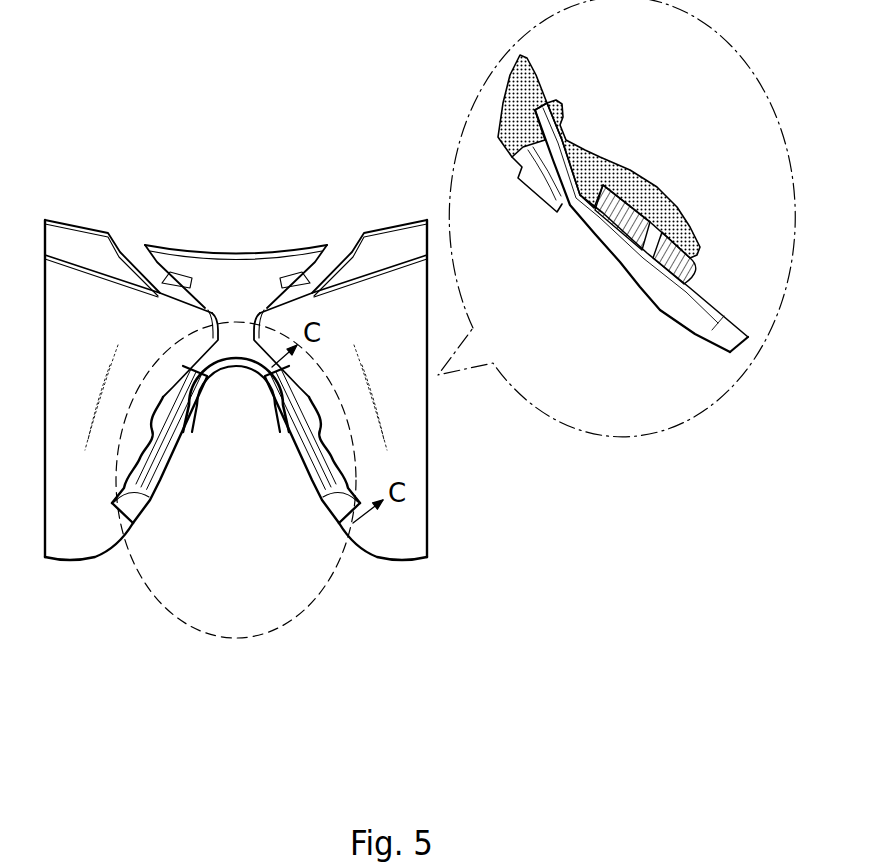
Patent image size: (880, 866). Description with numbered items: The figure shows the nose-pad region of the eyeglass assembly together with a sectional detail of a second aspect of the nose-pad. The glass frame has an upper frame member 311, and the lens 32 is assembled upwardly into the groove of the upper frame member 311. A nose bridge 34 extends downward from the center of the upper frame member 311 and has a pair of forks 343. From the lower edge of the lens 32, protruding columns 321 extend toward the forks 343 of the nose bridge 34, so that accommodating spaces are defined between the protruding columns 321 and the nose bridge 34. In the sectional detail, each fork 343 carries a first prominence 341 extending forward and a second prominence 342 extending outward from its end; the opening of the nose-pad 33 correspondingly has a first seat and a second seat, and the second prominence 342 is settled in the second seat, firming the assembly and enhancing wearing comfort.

The upper frame member 311 is at (383, 250).
The lens 32 is at (77, 550).
The protruding column 321 is at (601, 214).
The nose-pad 33 is at (703, 258).
The nose bridge 34 is at (245, 486).
The first prominence 341 is at (650, 190).
The second prominence 342 is at (700, 237).
The fork 343 is at (157, 447).